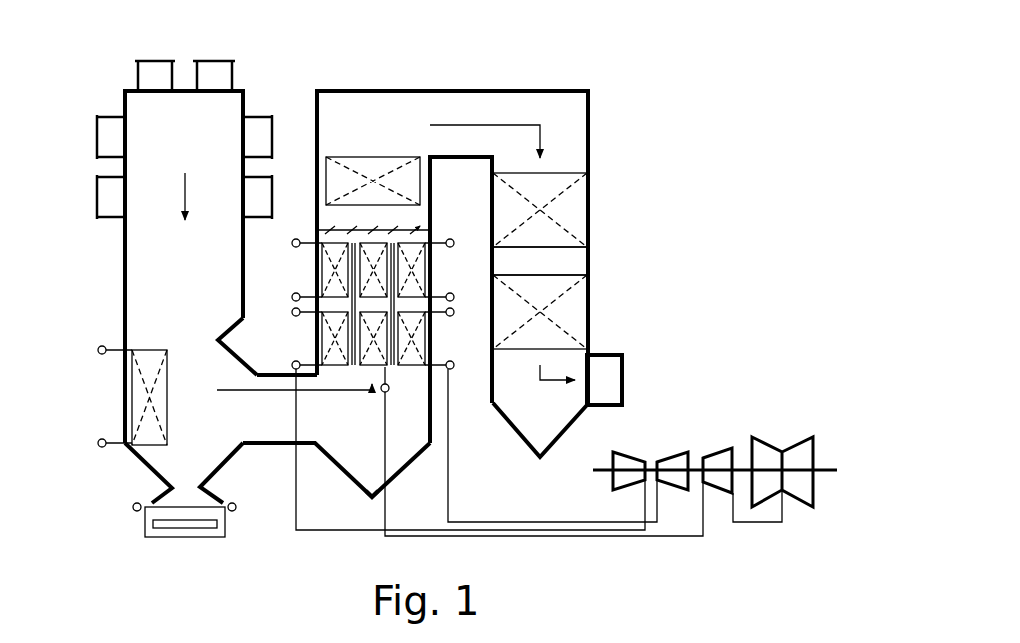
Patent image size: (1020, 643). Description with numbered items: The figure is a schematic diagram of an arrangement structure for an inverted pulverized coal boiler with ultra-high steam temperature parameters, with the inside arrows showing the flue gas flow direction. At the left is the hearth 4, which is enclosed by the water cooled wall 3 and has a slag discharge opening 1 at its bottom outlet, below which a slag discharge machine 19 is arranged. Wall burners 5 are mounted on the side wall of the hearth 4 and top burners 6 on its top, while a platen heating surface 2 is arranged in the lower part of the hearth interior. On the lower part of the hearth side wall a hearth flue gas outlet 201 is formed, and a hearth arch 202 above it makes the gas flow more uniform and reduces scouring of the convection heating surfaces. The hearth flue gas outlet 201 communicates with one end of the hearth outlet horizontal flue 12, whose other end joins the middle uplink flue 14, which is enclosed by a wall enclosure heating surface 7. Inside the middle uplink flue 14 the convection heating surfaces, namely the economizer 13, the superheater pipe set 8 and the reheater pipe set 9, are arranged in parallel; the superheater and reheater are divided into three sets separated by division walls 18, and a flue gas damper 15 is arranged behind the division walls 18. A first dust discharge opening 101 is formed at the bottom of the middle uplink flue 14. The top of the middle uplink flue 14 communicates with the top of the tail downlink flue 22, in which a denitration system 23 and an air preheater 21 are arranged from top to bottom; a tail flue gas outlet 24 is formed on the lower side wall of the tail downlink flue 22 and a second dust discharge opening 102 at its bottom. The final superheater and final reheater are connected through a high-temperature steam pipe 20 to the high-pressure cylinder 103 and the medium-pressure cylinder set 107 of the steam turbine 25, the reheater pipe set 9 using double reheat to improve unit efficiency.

The slag discharge opening 1 is at (140, 466).
The platen heating surface 2 is at (102, 392).
The water cooled wall 3 is at (177, 267).
The hearth 4 is at (111, 224).
The wall burner 5 is at (155, 141).
The top burner 6 is at (170, 53).
The wall enclosure heating surface 7 is at (419, 236).
The superheater pipe set 8 is at (287, 301).
The reheater pipe set 9 is at (406, 301).
The hearth outlet horizontal flue 12 is at (336, 470).
The economizer 13 is at (410, 110).
The middle uplink flue 14 is at (433, 195).
The flue gas damper 15 is at (404, 214).
The division wall 18 is at (421, 316).
The slag discharge machine 19 is at (131, 492).
The high-temperature steam pipe 20 is at (539, 451).
The air preheater 21 is at (574, 203).
The tail downlink flue 22 is at (574, 248).
The denitration system 23 is at (574, 305).
The tail flue gas outlet 24 is at (597, 352).
The steam turbine 25 is at (794, 450).
The first dust discharge opening 101 is at (430, 467).
The second dust discharge opening 102 is at (601, 442).
The high-pressure cylinder 103 is at (665, 442).
The medium-pressure cylinder set 107 is at (706, 443).
The hearth flue gas outlet 201 is at (294, 449).
The hearth arch 202 is at (212, 333).